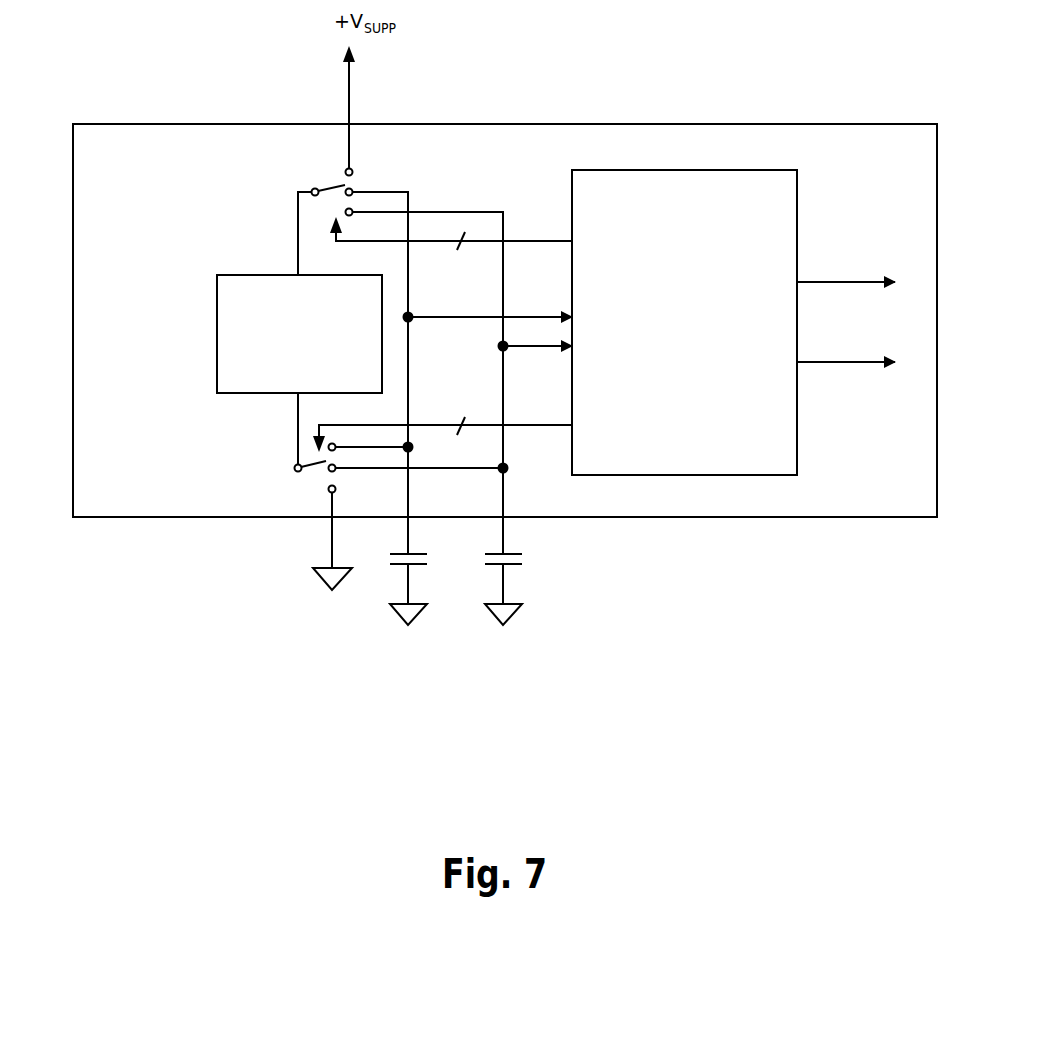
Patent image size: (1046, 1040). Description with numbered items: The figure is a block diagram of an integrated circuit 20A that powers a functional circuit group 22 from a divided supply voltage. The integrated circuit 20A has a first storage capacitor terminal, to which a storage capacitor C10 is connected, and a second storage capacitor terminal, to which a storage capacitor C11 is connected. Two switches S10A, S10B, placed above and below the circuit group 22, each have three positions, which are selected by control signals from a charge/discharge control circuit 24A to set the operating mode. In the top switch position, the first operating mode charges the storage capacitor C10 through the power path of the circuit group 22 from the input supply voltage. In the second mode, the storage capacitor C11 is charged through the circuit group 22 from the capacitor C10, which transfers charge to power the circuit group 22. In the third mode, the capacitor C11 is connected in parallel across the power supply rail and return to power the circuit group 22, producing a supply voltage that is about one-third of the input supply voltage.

The integrated circuit 20A is at (127, 179).
The circuit group 22 is at (255, 356).
The charge/discharge control circuit 24A is at (757, 226).
The switch S10A is at (361, 182).
The switch S10B is at (343, 517).
The storage capacitor C10 is at (425, 576).
The storage capacitor C11 is at (526, 576).